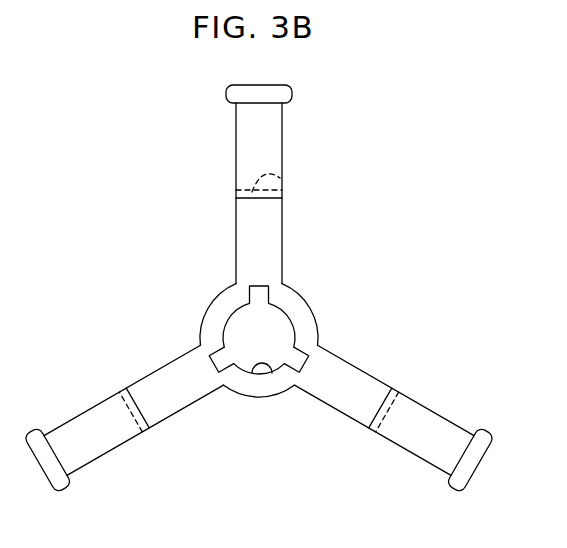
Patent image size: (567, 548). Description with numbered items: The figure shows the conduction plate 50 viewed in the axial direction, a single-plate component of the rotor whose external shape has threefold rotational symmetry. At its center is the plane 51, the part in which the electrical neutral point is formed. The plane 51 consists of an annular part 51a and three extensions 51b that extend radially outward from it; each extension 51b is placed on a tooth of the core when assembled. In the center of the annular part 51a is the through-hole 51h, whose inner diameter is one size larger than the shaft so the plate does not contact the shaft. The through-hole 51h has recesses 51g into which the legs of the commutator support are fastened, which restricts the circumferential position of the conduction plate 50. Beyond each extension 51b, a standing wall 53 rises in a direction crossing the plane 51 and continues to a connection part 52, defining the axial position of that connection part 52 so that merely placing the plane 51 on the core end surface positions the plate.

The conduction plate 50 is at (258, 291).
The plane 51 is at (384, 410).
The annular part 51a is at (308, 317).
The extension 51b is at (356, 377).
The recess 51g is at (222, 348).
The through-hole 51h is at (262, 375).
The connection part 52 is at (291, 194).
The standing wall 53 is at (280, 178).